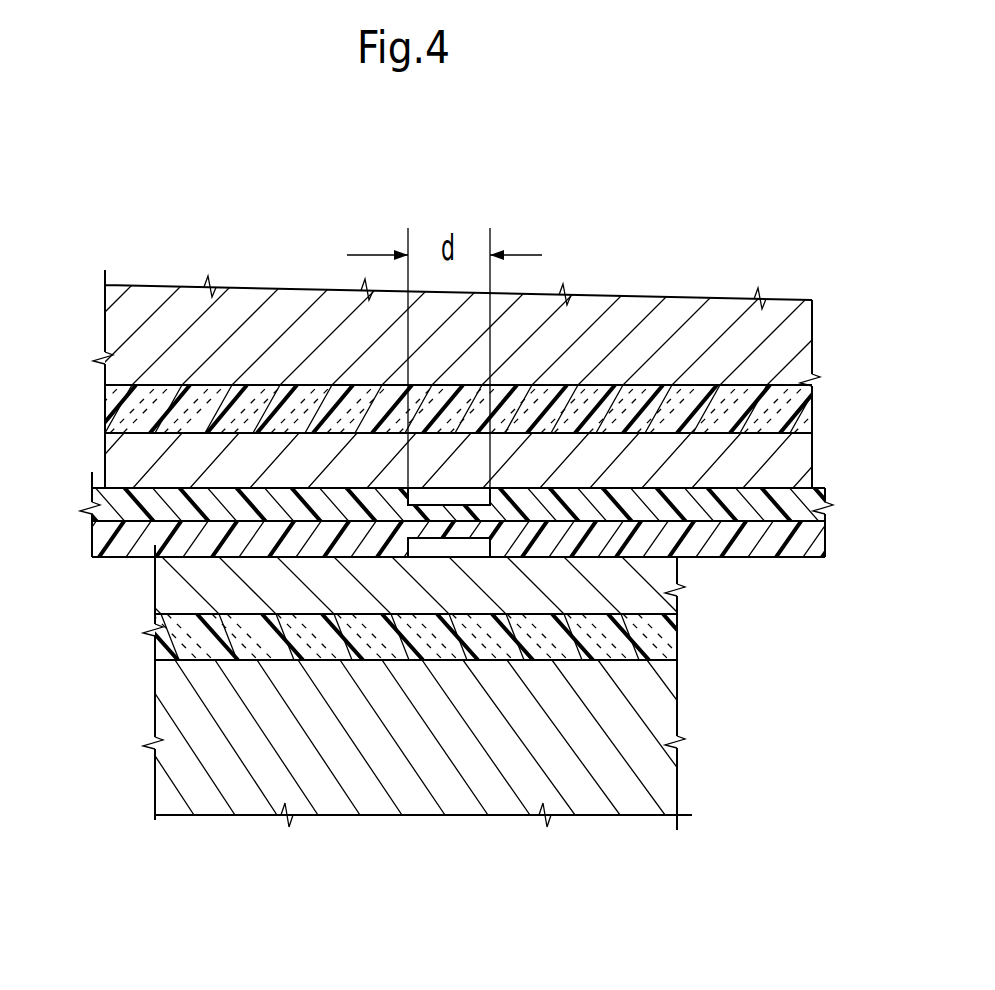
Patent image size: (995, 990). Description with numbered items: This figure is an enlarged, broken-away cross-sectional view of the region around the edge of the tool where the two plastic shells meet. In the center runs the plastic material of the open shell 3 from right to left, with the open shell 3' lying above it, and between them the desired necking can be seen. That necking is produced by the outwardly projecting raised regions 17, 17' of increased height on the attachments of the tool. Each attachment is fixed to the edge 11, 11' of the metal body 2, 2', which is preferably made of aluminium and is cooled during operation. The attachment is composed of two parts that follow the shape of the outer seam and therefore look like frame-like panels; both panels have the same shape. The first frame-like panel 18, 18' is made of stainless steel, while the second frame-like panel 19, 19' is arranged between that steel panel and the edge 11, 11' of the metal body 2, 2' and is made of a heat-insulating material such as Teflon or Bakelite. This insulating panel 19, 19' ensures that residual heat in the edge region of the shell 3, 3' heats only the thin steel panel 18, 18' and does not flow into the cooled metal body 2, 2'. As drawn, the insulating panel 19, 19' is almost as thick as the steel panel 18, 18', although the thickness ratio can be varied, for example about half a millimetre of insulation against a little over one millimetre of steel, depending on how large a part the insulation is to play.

The metal body 2 is at (378, 709).
The metal body 2' is at (484, 340).
The open shell 3 is at (446, 596).
The open shell 3' is at (474, 491).
The edge 11 is at (406, 783).
The edge 11' is at (449, 288).
The raised region 17 is at (568, 613).
The raised region 17' is at (342, 352).
The first frame-like panel 18 is at (385, 590).
The first frame-like panel 18' is at (432, 455).
The second frame-like panel 19 is at (373, 648).
The second frame-like panel 19' is at (423, 392).